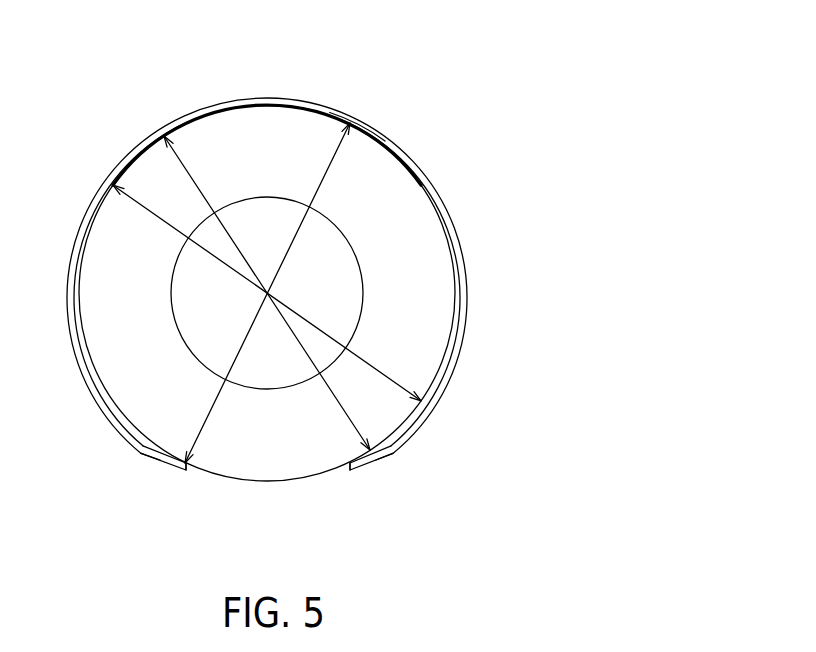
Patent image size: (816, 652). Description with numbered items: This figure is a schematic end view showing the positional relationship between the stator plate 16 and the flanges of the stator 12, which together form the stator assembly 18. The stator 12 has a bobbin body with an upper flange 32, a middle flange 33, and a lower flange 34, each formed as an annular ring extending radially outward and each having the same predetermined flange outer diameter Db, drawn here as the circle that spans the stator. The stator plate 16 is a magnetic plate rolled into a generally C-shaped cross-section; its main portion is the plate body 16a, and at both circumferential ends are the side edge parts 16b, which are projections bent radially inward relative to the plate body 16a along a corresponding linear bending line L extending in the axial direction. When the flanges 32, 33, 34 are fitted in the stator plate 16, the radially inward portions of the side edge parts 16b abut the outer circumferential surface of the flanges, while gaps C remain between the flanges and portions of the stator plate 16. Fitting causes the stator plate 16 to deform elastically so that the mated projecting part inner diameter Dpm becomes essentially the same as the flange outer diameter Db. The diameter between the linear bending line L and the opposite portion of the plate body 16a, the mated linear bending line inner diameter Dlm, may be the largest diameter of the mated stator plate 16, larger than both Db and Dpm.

The stator 12 is at (358, 276).
The stator plate 16 is at (302, 295).
The plate body 16a is at (183, 113).
The side edge parts 16b is at (173, 467).
The stator assembly 18 is at (357, 96).
The upper flange 32 is at (358, 293).
The middle flange 33 is at (358, 293).
The lower flange 34 is at (430, 292).
The flange outer diameter Db is at (267, 293).
The mated projecting part inner diameter Dpm is at (267, 293).
The mated linear bending line inner diameter Dlm is at (267, 293).
The gaps C is at (160, 455).
The linear bending line L is at (156, 466).